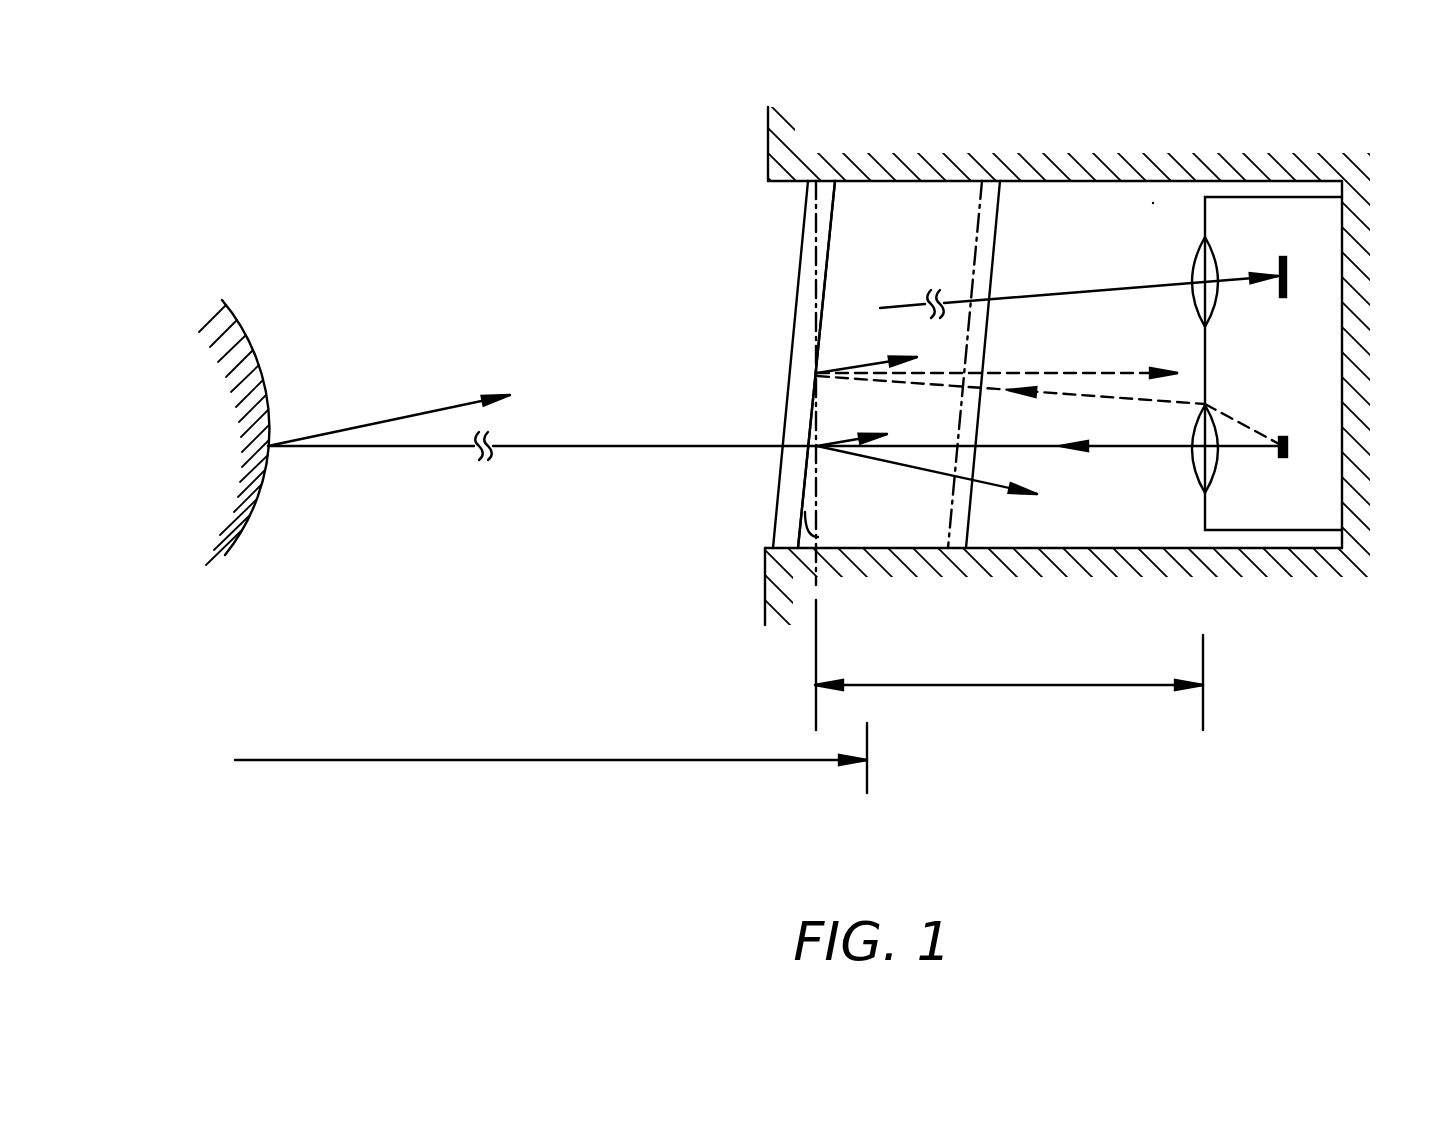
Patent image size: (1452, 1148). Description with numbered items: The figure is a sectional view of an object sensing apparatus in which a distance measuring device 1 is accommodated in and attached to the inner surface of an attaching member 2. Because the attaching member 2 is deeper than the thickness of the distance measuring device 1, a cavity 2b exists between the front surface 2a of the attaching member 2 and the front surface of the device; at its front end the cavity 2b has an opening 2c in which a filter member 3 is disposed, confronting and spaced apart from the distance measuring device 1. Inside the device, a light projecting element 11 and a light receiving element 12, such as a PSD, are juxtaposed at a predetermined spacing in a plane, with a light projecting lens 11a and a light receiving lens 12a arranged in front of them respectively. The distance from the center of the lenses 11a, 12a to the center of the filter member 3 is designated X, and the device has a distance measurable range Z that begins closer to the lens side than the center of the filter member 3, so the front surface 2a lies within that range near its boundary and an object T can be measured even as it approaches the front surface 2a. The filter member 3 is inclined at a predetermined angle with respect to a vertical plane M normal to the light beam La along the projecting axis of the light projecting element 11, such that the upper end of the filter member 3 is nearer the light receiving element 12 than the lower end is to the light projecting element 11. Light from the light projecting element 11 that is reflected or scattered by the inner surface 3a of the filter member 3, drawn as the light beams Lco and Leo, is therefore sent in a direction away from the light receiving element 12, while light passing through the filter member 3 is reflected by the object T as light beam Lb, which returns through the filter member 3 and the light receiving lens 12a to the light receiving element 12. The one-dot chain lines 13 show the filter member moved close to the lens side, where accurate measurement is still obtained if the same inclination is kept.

The distance measuring device 1 is at (1327, 223).
The attaching member 2 is at (953, 168).
The front surface of attaching member 2a is at (767, 126).
The cavity 2b is at (1153, 203).
The opening 2c is at (780, 187).
The filter member 3 is at (827, 183).
The inner surface of filter member 3a is at (833, 223).
The light projecting element 11 is at (1290, 447).
The light projecting lens 11a is at (1218, 463).
The light receiving element 12 is at (1287, 273).
The light receiving lens 12a is at (1218, 300).
The filter member moved close to lens side 13 is at (997, 204).
The object to be sensed T is at (243, 341).
The light beam along light projecting axis La is at (592, 448).
The reflected light beam Lb is at (370, 420).
The reflected light at window Lco is at (990, 483).
The emitted light reflected Leo is at (1060, 372).
The emitted light Ld is at (1072, 396).
The vertical plane M is at (817, 625).
The distance between lens center and filter center X is at (1009, 682).
The distance measurable range Z is at (551, 757).